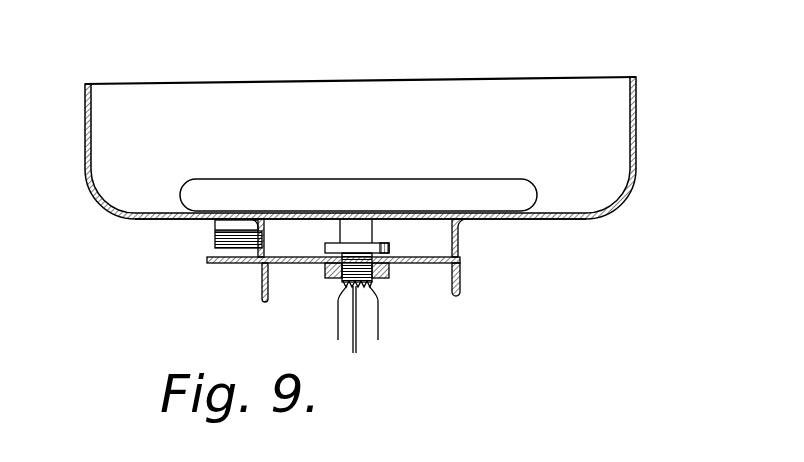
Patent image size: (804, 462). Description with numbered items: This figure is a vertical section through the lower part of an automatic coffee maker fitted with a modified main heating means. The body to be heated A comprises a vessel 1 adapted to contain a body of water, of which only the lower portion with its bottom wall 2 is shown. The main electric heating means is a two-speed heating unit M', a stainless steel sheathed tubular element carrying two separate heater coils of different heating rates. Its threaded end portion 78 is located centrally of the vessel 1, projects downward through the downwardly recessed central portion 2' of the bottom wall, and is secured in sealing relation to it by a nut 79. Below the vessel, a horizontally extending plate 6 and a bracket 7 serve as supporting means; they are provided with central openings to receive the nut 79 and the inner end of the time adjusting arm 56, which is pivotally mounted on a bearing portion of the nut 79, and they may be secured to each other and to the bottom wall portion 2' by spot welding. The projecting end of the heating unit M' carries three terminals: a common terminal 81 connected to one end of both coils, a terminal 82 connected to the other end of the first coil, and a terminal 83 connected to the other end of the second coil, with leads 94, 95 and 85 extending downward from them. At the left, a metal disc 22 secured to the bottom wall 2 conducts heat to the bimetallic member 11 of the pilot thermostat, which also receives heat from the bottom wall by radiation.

The body to be heated A is at (84, 140).
The vessel 1 is at (637, 108).
The bottom wall 2 is at (360, 234).
The two-speed heating unit M' is at (364, 180).
The downwardly recessed central portion of the bottom wall 2' is at (367, 245).
The horizontally extending plate 6 is at (220, 267).
The time adjusting arm 56 is at (251, 282).
The bracket 7 is at (443, 268).
The metal disc 22 is at (220, 225).
The bimetallic member 11 is at (218, 238).
The threaded end portion 78 is at (392, 271).
The nut 79 is at (330, 272).
The terminal 82 is at (374, 291).
The common terminal 81 is at (360, 292).
The terminal 83 is at (347, 289).
The lead wire 95 is at (338, 325).
The lead wire 94 is at (378, 333).
The lead wires 85 is at (355, 333).